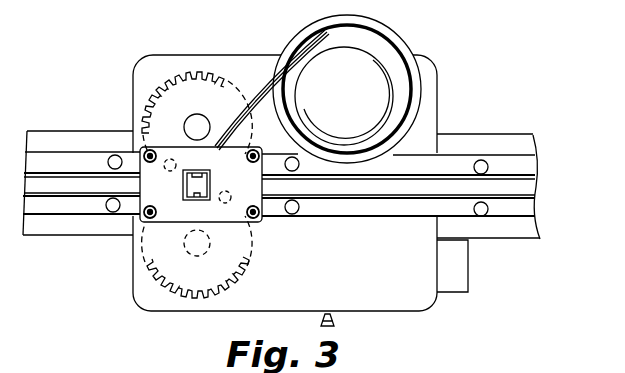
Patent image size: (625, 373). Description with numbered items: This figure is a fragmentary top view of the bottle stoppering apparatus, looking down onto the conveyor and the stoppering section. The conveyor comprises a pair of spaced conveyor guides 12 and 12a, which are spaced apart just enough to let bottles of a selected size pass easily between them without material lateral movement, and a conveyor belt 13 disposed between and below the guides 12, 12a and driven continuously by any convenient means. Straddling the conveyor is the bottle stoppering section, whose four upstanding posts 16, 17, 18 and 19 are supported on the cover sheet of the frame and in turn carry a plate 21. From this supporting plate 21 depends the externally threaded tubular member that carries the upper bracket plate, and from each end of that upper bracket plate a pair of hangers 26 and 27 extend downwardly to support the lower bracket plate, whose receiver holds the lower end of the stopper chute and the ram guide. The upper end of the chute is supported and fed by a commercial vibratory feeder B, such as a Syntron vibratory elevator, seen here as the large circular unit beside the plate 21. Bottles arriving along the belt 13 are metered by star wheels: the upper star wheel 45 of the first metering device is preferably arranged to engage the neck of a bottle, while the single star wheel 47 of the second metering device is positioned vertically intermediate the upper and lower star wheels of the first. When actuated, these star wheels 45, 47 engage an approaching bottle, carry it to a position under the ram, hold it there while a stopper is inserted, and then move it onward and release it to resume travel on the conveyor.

The vibratory feeder B is at (412, 42).
The upper star wheel 45 is at (229, 83).
The star wheel 47 is at (173, 290).
The conveyor guide 12 is at (307, 193).
The conveyor guide 12a is at (500, 178).
The conveyor belt 13 is at (525, 188).
The plate 21 is at (258, 200).
The upstanding post 19 is at (151, 154).
The upstanding post 18 is at (254, 153).
The upstanding post 17 is at (151, 216).
The upstanding post 16 is at (254, 218).
The hanger 26 is at (175, 163).
The hanger 27 is at (228, 194).